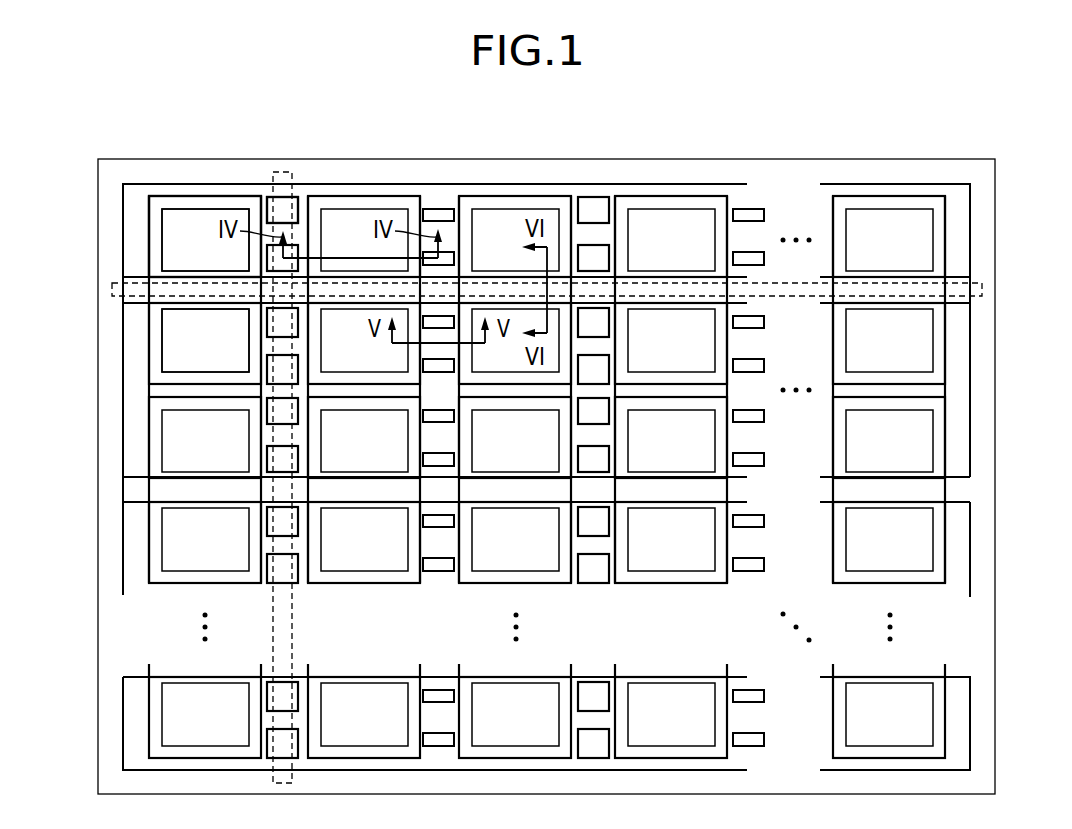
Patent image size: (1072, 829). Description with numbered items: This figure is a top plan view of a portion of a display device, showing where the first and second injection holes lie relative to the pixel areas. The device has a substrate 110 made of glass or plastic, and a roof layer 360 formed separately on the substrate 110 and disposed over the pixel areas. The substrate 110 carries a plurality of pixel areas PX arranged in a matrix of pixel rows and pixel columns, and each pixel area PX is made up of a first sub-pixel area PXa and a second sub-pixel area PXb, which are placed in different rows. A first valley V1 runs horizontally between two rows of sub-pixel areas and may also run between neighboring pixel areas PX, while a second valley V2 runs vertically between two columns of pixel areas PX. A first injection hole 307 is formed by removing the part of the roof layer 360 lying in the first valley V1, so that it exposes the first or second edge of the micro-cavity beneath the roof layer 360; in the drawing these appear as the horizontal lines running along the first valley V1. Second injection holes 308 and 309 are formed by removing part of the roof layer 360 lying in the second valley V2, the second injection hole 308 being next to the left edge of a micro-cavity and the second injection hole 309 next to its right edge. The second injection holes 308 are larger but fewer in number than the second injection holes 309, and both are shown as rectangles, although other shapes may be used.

The substrate 110 is at (652, 160).
The first injection hole 307 is at (925, 302).
The second injection hole 308 is at (267, 211).
The second injection hole 309 is at (438, 209).
The roof layer 360 is at (123, 404).
The pixel area PX is at (150, 212).
The first sub-pixel area PXa is at (162, 240).
The second sub-pixel area PXb is at (162, 339).
The first valley V1 is at (112, 288).
The second valley V2 is at (282, 172).